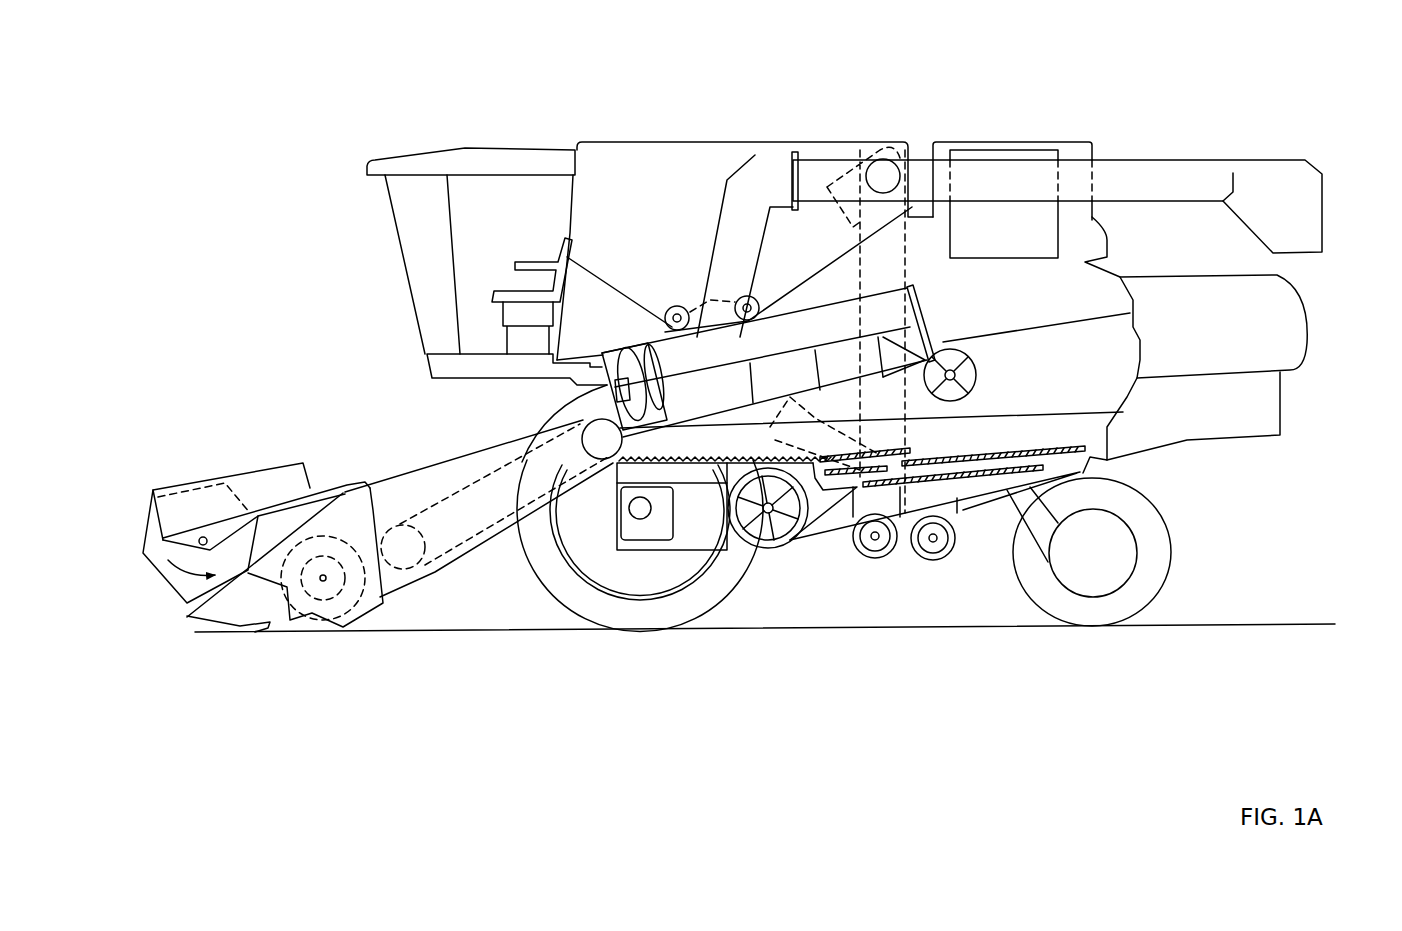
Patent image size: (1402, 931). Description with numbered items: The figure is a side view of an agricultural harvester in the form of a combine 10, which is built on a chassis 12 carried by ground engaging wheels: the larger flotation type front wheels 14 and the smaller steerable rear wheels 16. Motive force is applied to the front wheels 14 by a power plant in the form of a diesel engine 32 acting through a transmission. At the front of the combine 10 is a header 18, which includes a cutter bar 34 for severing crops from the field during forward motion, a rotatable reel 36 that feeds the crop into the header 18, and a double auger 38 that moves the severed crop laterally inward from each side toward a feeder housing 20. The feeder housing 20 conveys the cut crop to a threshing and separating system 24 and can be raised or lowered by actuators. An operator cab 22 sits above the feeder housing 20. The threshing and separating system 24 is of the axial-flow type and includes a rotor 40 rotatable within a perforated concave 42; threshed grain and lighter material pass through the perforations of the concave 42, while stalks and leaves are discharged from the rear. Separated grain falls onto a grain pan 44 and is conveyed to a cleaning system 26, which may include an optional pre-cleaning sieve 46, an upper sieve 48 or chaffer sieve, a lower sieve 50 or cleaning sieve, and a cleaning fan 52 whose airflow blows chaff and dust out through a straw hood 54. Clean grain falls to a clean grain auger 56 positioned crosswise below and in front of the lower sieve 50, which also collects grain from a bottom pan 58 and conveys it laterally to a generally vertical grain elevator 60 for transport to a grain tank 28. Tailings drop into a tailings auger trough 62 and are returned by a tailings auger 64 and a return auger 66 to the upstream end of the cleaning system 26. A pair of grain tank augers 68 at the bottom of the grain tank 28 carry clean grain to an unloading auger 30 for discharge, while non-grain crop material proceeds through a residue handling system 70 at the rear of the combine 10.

The combine 10 is at (464, 130).
The chassis 12 is at (1105, 465).
The front wheels 14 is at (545, 590).
The rear wheels 16 is at (1170, 568).
The header 18 is at (236, 460).
The feeder housing 20 is at (450, 465).
The operator cab 22 is at (400, 245).
The threshing and separating system 24 is at (545, 400).
The cleaning system 26 is at (829, 560).
The grain tank 28 is at (630, 140).
The unloading auger 30 is at (1185, 160).
The diesel engine 32 is at (995, 150).
The cutter bar 34 is at (250, 630).
The rotatable reel 36 is at (150, 515).
The double auger 38 is at (325, 600).
The rotor 40 is at (615, 350).
The perforated concave 42 is at (810, 335).
The grain pan 44 is at (622, 486).
The pre-cleaning sieve 46 is at (915, 455).
The upper sieve 48 is at (1010, 452).
The lower sieve 50 is at (985, 535).
The cleaning fan 52 is at (770, 545).
The straw hood 54 is at (1300, 312).
The clean grain auger 56 is at (878, 560).
The bottom pan 58 is at (1058, 523).
The grain elevator 60 is at (905, 262).
The tailings auger trough 62 is at (1048, 562).
The tailings auger 64 is at (930, 560).
The return auger 66 is at (849, 437).
The grain tank augers 68 is at (672, 305).
The residue handling system 70 is at (1255, 450).